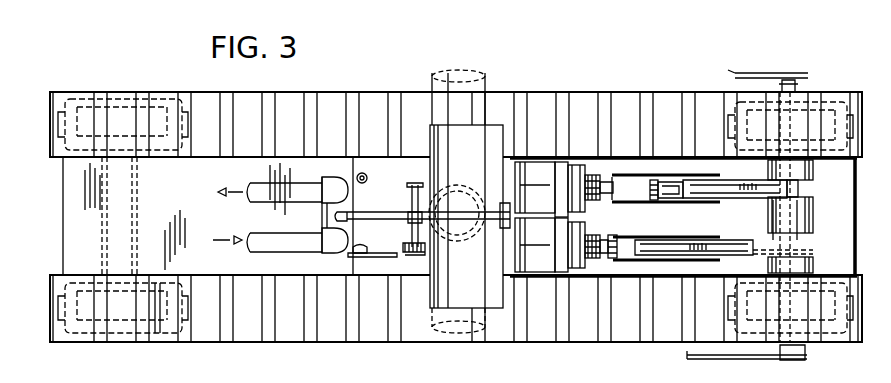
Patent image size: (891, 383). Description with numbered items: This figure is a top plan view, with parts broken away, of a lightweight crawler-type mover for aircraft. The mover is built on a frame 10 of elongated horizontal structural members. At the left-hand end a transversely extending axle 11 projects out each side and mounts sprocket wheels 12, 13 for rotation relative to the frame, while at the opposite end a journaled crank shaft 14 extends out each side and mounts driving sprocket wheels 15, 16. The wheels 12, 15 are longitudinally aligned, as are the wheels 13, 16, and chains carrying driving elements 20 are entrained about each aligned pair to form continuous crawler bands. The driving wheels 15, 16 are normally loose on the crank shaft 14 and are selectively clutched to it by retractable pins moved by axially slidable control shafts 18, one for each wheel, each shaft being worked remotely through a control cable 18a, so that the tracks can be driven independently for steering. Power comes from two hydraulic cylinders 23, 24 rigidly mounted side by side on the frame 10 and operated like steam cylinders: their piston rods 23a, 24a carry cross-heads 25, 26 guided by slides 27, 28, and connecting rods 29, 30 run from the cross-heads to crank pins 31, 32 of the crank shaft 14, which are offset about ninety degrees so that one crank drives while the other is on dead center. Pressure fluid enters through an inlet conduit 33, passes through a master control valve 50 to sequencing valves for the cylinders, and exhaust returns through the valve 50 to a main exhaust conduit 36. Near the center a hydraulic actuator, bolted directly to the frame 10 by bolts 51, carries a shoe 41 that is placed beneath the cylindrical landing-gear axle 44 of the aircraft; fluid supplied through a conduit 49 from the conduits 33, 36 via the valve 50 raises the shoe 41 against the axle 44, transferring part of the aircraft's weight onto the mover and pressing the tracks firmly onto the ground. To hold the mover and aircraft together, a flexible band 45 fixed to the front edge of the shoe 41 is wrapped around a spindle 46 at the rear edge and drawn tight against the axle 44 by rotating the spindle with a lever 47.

The frame 10 is at (68, 198).
The axle 11 is at (100, 237).
The sprocket wheel 12 is at (88, 148).
The sprocket wheel 13 is at (84, 335).
The crank shaft 14 is at (813, 220).
The sprocket wheel 15 is at (805, 95).
The sprocket wheel 16 is at (830, 335).
The control shaft 18 is at (783, 362).
The control cable 18a is at (725, 358).
The driving element 20 is at (162, 315).
The hydraulic cylinder 23 is at (533, 265).
The piston rod 23a is at (622, 245).
The hydraulic cylinder 24 is at (525, 163).
The piston rod 24a is at (612, 195).
The cross-head 25 is at (612, 265).
The cross-head 26 is at (665, 190).
The slide 27 is at (710, 258).
The slide 28 is at (713, 175).
The connecting rod 29 is at (732, 243).
The connecting rod 30 is at (740, 192).
The crank pin 31 is at (795, 252).
The crank pin 32 is at (798, 190).
The inlet conduit 33 is at (262, 242).
The main exhaust conduit 36 is at (262, 183).
The shoe 41 is at (497, 127).
The axle 44 is at (470, 72).
The flexible band 45 is at (432, 182).
The spindle 46 is at (408, 226).
The lever 47 is at (393, 257).
The conduit 49 is at (373, 213).
The master control valve 50 is at (325, 208).
The bolt 51 is at (367, 180).